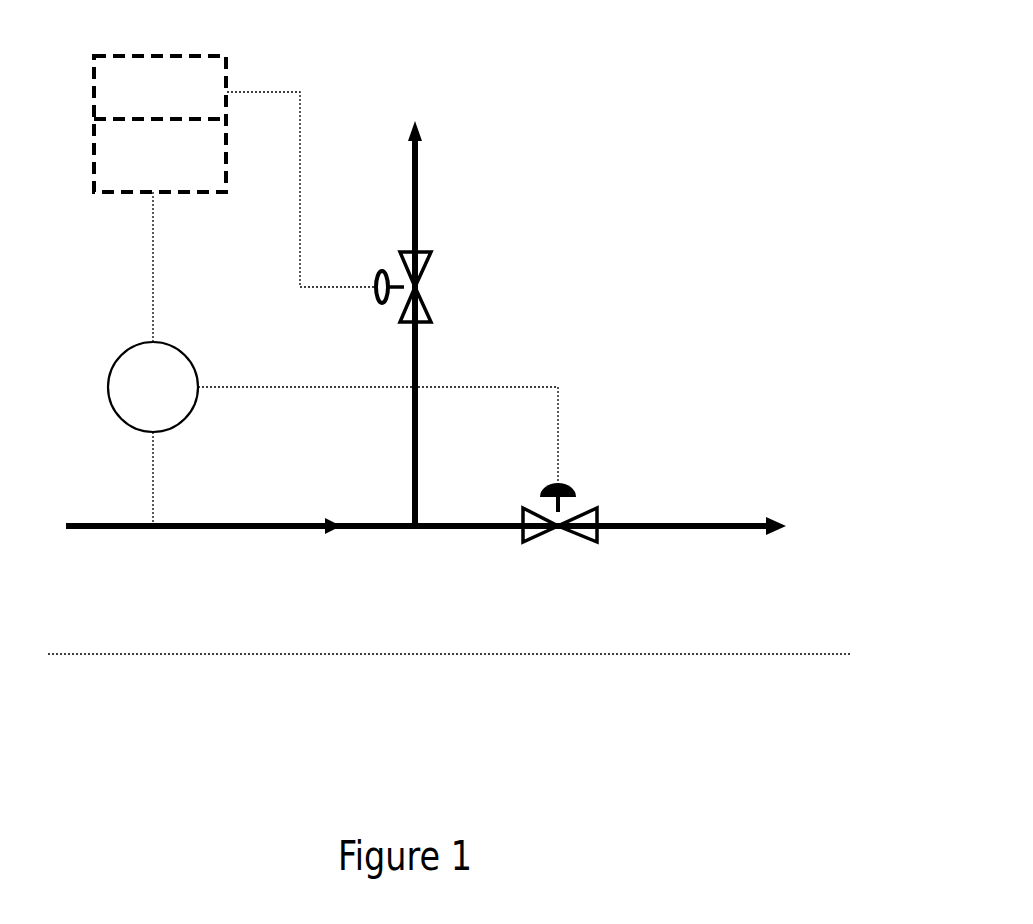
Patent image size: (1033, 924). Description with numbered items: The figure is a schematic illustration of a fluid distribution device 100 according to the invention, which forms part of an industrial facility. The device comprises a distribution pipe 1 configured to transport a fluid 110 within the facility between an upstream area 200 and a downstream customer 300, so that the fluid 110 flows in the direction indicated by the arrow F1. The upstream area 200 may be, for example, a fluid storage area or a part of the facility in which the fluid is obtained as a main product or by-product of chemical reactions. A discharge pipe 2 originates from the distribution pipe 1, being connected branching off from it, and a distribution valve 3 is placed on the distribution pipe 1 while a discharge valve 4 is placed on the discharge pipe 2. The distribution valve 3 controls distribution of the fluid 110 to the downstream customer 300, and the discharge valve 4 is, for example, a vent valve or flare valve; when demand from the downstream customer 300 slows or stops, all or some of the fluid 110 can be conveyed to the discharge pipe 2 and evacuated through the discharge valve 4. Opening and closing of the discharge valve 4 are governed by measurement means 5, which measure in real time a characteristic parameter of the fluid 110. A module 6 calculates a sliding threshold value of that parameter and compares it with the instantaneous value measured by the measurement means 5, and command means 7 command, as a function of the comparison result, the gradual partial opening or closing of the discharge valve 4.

The distribution pipe 1 is at (686, 530).
The discharge pipe 2 is at (426, 178).
The distribution valve 3 is at (541, 540).
The discharge valve 4 is at (428, 300).
The measurement means 5 is at (158, 388).
The module 6 is at (160, 124).
The command means 7 is at (148, 83).
The fluid distribution device 100 is at (607, 186).
The fluid 110 is at (333, 530).
The upstream area 200 is at (73, 499).
The downstream customer 300 is at (820, 524).
The arrow F1 is at (766, 499).